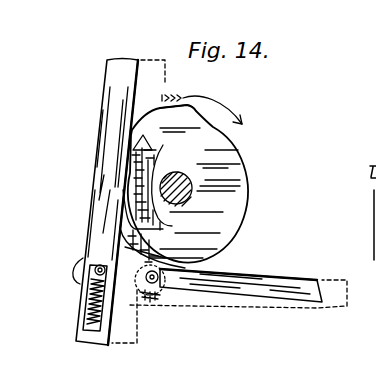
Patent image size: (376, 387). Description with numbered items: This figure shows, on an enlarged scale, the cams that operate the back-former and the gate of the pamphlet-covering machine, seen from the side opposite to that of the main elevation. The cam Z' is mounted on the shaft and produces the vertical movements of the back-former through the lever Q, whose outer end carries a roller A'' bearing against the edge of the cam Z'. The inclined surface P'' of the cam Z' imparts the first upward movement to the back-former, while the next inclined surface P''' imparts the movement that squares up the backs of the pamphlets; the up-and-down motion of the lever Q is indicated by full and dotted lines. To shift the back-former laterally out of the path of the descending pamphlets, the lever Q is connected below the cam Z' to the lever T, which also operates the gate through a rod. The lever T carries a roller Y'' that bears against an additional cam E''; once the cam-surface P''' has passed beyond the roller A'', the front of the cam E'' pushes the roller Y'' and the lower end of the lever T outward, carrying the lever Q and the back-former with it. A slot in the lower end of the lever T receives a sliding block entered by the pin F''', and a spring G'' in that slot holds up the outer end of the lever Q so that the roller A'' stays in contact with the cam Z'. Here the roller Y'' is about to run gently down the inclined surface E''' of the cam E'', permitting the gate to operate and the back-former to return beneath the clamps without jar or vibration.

The lever T is at (107, 202).
The roller Y'' is at (94, 173).
The cam Z' is at (203, 184).
The inclined surface P'' is at (215, 123).
The inclined surface P''' is at (202, 96).
The cam E'' is at (162, 182).
The inclined surface E''' is at (157, 229).
The spring housing C is at (106, 297).
The spring G'' is at (76, 302).
The pin F''' is at (67, 263).
The roller A'' is at (156, 308).
The lever Q is at (241, 300).